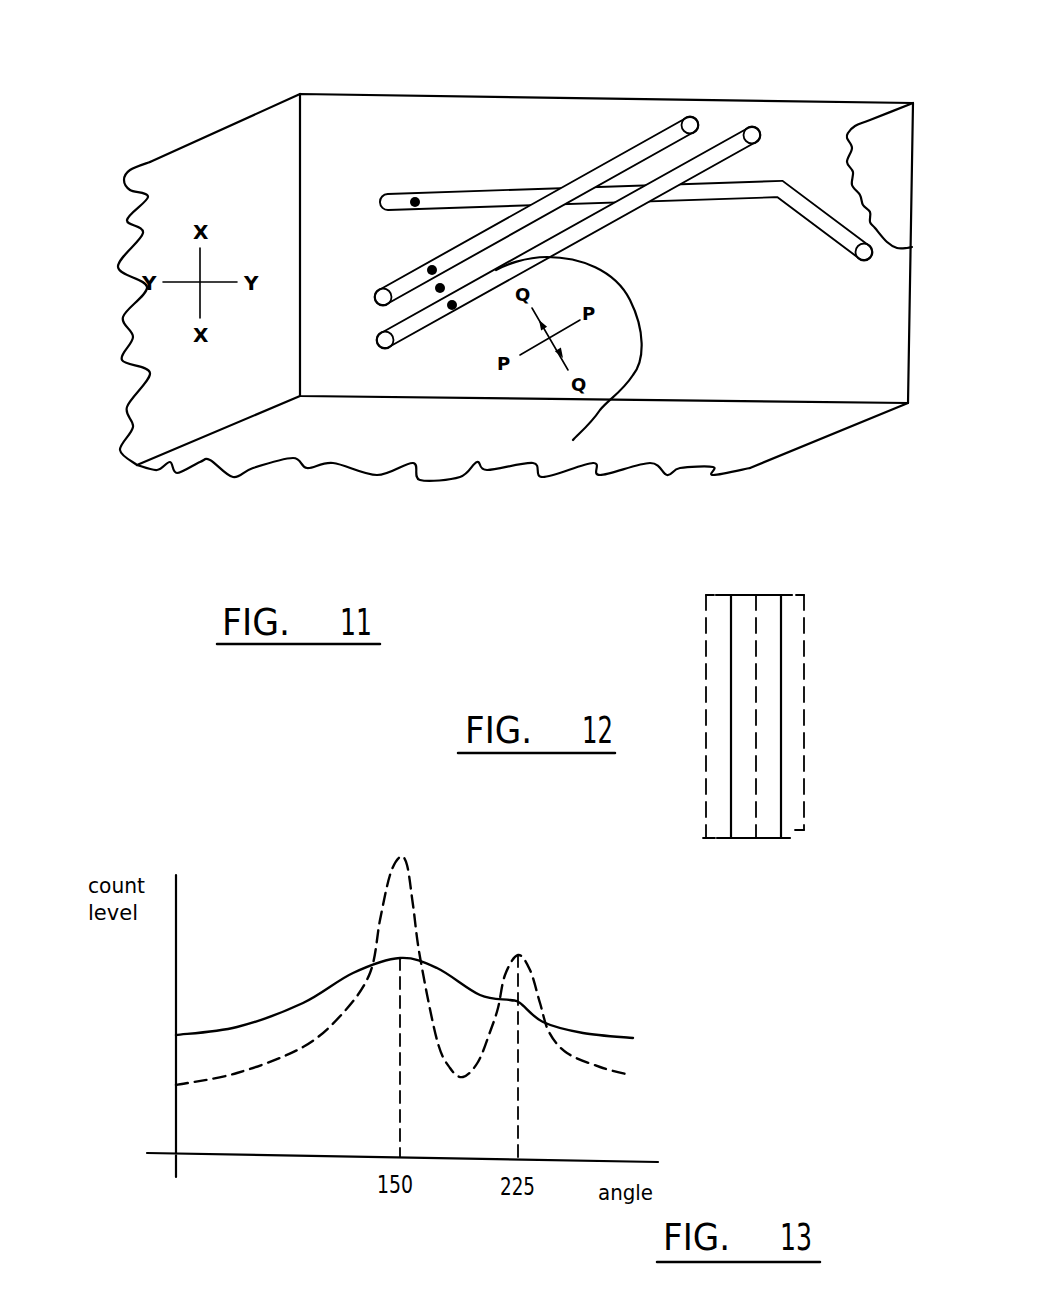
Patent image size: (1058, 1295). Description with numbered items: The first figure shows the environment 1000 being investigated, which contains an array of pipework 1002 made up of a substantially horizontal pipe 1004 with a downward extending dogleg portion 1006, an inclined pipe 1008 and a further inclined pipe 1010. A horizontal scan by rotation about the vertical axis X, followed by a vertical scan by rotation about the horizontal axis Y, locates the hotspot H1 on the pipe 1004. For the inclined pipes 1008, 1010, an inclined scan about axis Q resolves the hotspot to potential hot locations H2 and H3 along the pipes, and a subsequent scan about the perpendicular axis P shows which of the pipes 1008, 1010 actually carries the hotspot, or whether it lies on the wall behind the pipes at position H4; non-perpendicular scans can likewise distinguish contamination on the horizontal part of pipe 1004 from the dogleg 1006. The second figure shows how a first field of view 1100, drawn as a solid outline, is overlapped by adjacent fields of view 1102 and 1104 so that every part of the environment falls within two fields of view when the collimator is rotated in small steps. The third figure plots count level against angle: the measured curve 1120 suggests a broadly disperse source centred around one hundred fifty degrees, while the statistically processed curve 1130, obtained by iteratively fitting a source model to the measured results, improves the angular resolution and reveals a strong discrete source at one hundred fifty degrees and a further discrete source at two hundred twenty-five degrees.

In FIG. 11, the environment 1000 is at (728, 356).
In FIG. 11, the array of pipework 1002 is at (566, 148).
In FIG. 11, the substantially horizontal pipe 1004 is at (469, 198).
In FIG. 11, the downward extending dogleg portion 1006 is at (827, 227).
In FIG. 11, the inclined pipe 1008 is at (403, 284).
In FIG. 11, the further inclined pipe 1010 is at (440, 288).
In FIG. 11, the hotspot H1 is at (415, 202).
In FIG. 11, the potential hot location H2 is at (432, 270).
In FIG. 11, the potential hot location H3 is at (452, 305).
In FIG. 11, the position on wall behind pipe H4 is at (573, 440).
In FIG. 12, the first field of view 1100 is at (743, 840).
In FIG. 12, the adjacent field of view 1102 is at (710, 838).
In FIG. 12, the adjacent field of view 1104 is at (797, 840).
In FIG. 13, the curve 1120 is at (537, 1000).
In FIG. 13, the curve 1130 is at (410, 887).